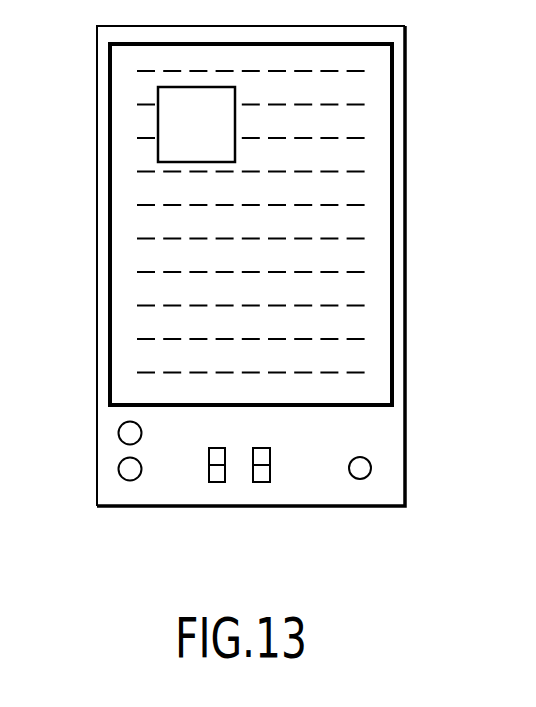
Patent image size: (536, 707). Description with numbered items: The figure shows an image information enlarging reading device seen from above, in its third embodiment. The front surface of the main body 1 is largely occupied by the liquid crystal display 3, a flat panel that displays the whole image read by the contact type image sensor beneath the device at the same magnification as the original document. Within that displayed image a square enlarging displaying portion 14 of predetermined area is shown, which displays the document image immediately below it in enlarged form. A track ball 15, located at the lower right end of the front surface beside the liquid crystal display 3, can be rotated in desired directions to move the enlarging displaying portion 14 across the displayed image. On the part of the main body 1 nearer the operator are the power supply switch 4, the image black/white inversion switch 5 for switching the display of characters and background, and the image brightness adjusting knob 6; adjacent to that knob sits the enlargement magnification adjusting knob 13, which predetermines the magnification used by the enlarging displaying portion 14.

The main body 1 is at (400, 92).
The liquid crystal display 3 is at (380, 182).
The enlarging displaying portion 14 is at (158, 123).
The image brightness adjusting knob 6 is at (118, 433).
The enlargement magnification adjusting knob 13 is at (130, 481).
The image black/white inversion switch 5 is at (225, 448).
The power supply switch 4 is at (270, 448).
The track ball 15 is at (371, 468).